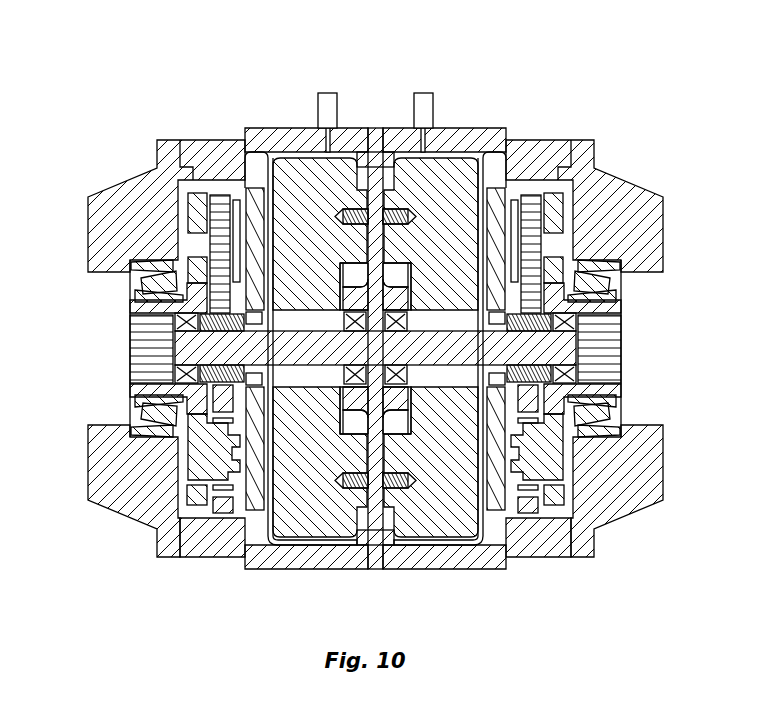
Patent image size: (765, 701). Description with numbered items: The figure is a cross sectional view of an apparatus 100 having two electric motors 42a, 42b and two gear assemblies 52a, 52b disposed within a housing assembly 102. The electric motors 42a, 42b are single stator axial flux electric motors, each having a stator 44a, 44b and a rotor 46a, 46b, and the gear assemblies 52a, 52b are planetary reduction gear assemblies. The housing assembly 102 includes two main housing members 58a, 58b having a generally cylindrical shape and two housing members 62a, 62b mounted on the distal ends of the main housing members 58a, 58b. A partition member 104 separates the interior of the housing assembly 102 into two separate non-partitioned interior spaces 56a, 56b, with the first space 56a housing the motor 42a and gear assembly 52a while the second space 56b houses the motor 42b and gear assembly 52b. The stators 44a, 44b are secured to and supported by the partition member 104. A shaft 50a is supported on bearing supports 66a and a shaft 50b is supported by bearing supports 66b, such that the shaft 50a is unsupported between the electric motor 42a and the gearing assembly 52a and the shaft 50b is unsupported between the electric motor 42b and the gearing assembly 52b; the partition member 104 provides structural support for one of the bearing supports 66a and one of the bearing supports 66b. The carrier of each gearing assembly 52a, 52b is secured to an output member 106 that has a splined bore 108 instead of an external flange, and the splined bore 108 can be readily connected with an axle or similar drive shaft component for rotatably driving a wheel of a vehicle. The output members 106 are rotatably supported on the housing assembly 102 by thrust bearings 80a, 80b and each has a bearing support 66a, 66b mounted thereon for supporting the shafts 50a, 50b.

The apparatus 100 is at (436, 61).
The housing assembly 102 is at (297, 125).
The partition member 104 is at (374, 127).
The output member 106 is at (130, 310).
The splined bore 108 is at (130, 358).
The electric motor 42a is at (266, 175).
The electric motor 42b is at (485, 175).
The stator 44a is at (303, 158).
The stator 44b is at (448, 158).
The rotor 46a is at (252, 188).
The rotor 46b is at (499, 188).
The shaft 50a is at (320, 470).
The shaft 50b is at (454, 470).
The gear assembly 52a is at (200, 512).
The gear assembly 52b is at (514, 486).
The interior space 56a is at (262, 524).
The interior space 56b is at (489, 524).
The main housing member 58a is at (214, 546).
The main housing member 58b is at (422, 548).
The housing member 62a is at (131, 505).
The housing member 62b is at (618, 506).
The bearing support 66a is at (142, 388).
The bearing support 66b is at (625, 327).
The thrust bearing 80a is at (150, 286).
The thrust bearing 80b is at (613, 410).